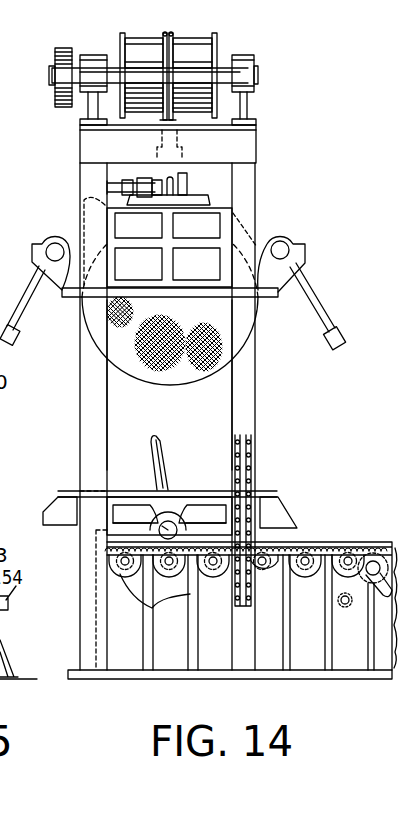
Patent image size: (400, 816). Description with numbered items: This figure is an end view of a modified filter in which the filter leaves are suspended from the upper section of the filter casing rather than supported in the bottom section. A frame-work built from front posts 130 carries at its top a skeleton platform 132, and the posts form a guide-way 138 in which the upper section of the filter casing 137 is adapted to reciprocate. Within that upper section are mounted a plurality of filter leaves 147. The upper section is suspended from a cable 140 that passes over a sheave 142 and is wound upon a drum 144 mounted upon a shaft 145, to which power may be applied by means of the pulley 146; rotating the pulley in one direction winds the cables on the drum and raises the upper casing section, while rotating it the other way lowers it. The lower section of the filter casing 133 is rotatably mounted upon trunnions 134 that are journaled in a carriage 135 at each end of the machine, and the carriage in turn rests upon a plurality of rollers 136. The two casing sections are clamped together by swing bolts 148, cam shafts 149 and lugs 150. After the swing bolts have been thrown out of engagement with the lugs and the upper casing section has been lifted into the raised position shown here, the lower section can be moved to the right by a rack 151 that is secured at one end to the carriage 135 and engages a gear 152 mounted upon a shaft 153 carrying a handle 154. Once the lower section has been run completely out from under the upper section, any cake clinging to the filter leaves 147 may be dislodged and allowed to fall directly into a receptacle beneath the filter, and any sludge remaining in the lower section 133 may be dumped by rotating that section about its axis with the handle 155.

The front posts 130 is at (93, 413).
The skeleton platform 132 is at (247, 107).
The lower section of the filter casing 133 is at (280, 492).
The trunnions 134 is at (169, 529).
The carriage 135 is at (118, 535).
The rollers 136 is at (205, 590).
The upper section of the filter casing 137 is at (208, 223).
The guide-way 138 is at (109, 443).
The cable 140 is at (175, 120).
The sheave 142 is at (174, 52).
The drum 144 is at (217, 50).
The shaft 145 is at (77, 65).
The pulley 146 is at (63, 58).
The filter leaves 147 is at (128, 365).
The swing bolts 148 is at (24, 318).
The cam shafts 149 is at (53, 247).
The lugs 150 is at (55, 515).
The rack 151 is at (313, 545).
The gear 152 is at (376, 590).
The shaft 153 is at (373, 553).
The handle 154 is at (354, 583).
The handle 155 is at (152, 448).